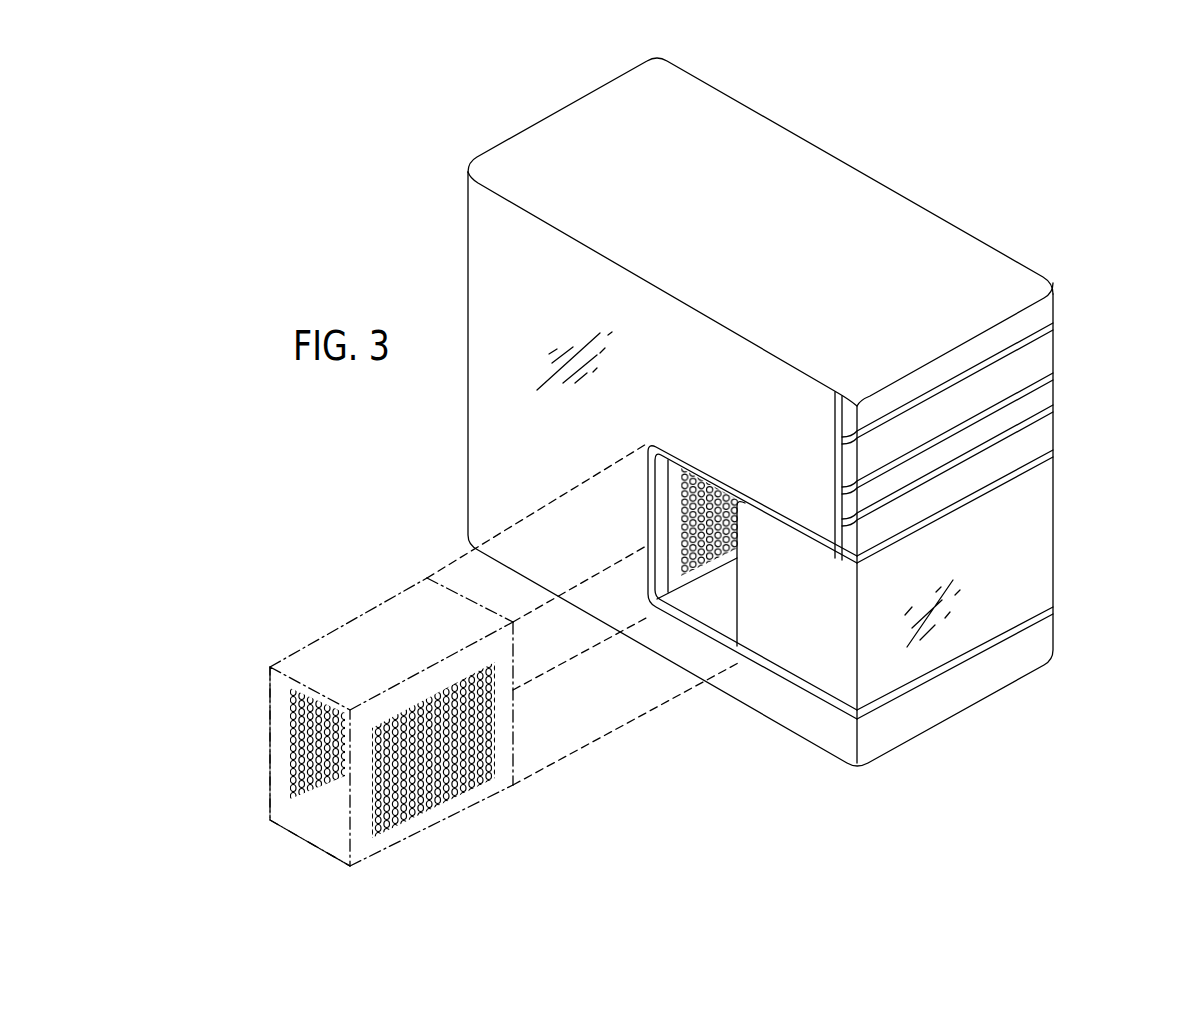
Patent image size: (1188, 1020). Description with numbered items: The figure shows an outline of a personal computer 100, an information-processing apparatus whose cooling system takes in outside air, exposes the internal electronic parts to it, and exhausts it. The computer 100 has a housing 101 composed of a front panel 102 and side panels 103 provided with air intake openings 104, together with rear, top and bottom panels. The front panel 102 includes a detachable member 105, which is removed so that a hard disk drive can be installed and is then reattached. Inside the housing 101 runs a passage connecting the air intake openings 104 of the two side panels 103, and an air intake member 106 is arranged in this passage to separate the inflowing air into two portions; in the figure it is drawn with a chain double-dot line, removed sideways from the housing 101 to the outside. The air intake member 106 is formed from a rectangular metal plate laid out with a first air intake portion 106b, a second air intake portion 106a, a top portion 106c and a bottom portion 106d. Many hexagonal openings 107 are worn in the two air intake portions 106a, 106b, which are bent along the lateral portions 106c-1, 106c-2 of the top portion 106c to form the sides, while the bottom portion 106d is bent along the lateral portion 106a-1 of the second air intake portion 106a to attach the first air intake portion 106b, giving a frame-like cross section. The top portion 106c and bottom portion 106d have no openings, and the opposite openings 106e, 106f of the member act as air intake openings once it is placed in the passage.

The personal computer 100 is at (913, 133).
The housing 101 is at (998, 244).
The front panel 102 is at (1170, 417).
The side panel 103 is at (478, 258).
The air intake opening 104 is at (722, 633).
The detachable member 105 is at (1028, 553).
The air intake member 106 is at (288, 652).
The second air intake portion 106a is at (507, 727).
The lateral portion of the second air intake portion 106a-1 is at (403, 850).
The first air intake portion 106b is at (282, 726).
The top portion 106c is at (386, 612).
The lateral portion of the top portion 106c-1 is at (343, 617).
The lateral portion of the top portion 106c-2 is at (485, 636).
The bottom portion 106d is at (330, 834).
The opening 106e is at (277, 788).
The opening 106f is at (481, 606).
The opening 107 is at (494, 778).